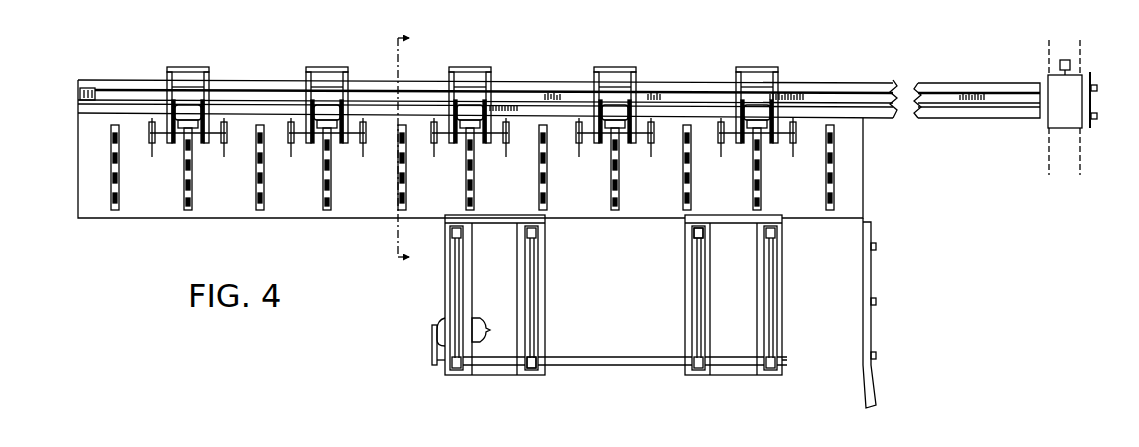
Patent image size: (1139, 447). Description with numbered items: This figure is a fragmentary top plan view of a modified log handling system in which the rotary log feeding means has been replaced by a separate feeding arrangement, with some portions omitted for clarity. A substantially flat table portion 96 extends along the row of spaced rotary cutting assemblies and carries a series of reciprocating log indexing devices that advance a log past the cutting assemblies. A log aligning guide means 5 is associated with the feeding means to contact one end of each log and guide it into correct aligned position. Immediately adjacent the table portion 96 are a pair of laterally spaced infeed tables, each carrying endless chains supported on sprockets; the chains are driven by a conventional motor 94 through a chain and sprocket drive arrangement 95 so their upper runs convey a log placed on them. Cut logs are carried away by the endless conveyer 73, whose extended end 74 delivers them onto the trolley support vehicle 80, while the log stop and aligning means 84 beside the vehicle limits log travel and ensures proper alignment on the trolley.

The log aligning guide means 5 is at (876, 389).
The endless conveyer 73 is at (80, 97).
The extended end 74 is at (1014, 121).
The trolley support vehicle 80 is at (1068, 131).
The log stop and aligning means 84 is at (1093, 129).
The motor 94 is at (442, 321).
The chain and sprocket drive arrangement 95 is at (435, 367).
The flat table portion 96 is at (592, 214).